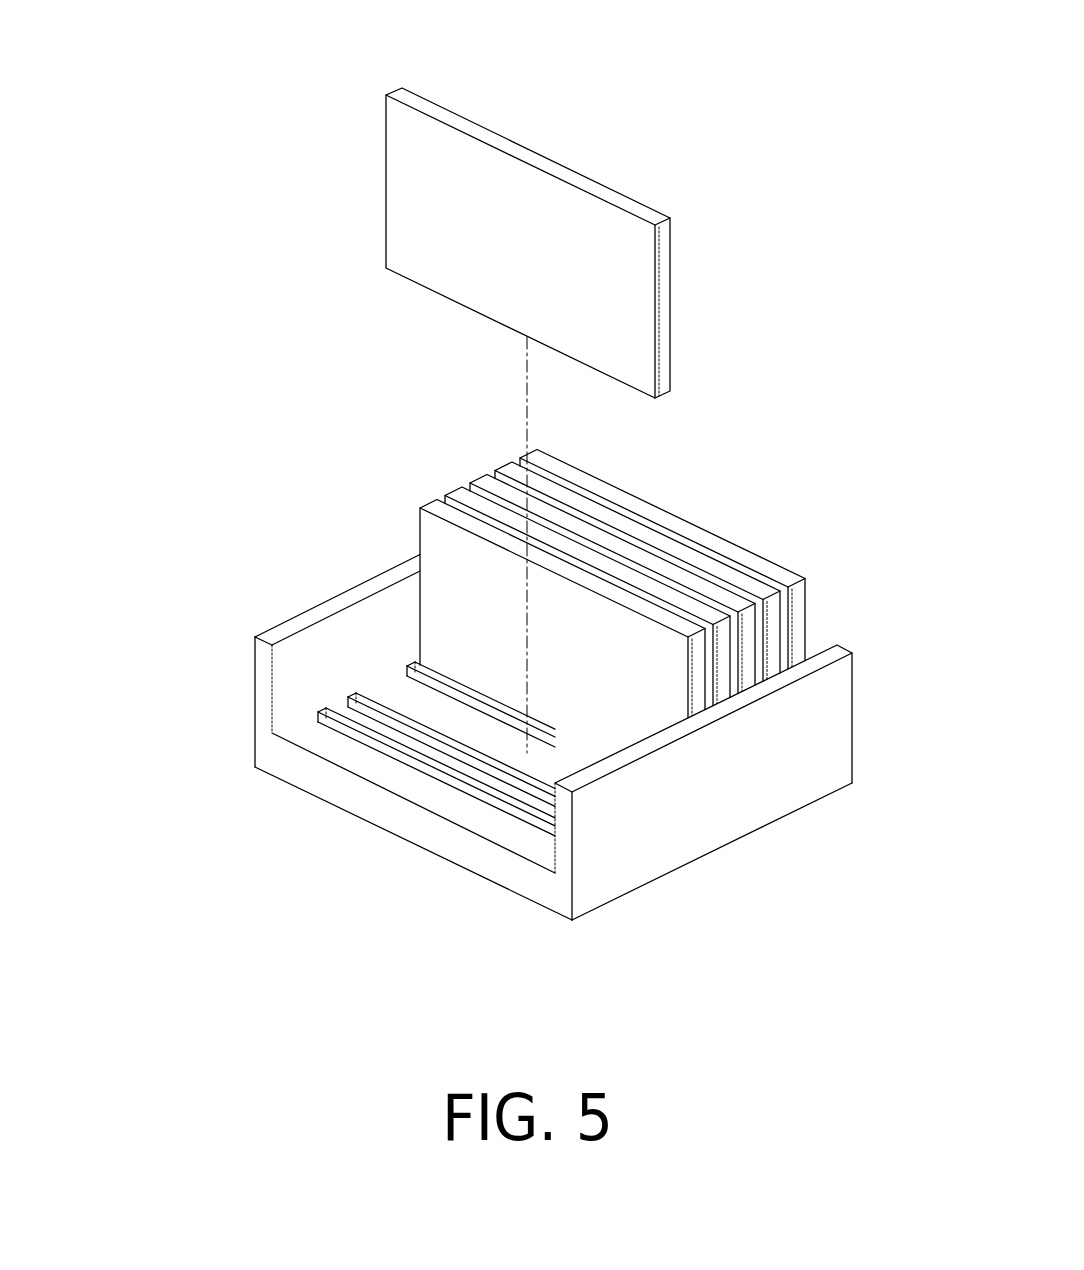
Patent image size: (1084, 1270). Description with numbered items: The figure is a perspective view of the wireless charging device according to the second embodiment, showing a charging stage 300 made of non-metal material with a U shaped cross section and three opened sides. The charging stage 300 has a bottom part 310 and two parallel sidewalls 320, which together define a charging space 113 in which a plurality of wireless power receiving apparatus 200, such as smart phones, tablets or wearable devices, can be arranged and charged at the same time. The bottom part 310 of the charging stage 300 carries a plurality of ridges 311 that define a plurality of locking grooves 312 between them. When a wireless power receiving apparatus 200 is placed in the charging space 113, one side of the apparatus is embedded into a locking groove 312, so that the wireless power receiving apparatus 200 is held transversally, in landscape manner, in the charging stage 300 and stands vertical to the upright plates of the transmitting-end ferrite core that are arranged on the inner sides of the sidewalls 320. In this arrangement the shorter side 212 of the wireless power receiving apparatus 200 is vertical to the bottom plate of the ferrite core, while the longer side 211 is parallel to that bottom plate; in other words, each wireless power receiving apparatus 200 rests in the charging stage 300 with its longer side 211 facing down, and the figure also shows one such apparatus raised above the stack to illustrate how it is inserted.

The wireless power receiving apparatus 200 is at (530, 359).
The longer side 211 is at (535, 160).
The shorter side 212 is at (665, 320).
The charging space 113 is at (493, 640).
The charging stage 300 is at (476, 712).
The bottom part 310 is at (367, 839).
The ridges 311 is at (500, 808).
The locking grooves 312 is at (379, 748).
The sidewalls 320 is at (262, 668).